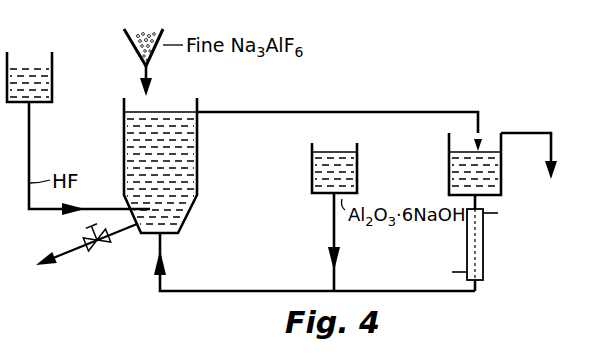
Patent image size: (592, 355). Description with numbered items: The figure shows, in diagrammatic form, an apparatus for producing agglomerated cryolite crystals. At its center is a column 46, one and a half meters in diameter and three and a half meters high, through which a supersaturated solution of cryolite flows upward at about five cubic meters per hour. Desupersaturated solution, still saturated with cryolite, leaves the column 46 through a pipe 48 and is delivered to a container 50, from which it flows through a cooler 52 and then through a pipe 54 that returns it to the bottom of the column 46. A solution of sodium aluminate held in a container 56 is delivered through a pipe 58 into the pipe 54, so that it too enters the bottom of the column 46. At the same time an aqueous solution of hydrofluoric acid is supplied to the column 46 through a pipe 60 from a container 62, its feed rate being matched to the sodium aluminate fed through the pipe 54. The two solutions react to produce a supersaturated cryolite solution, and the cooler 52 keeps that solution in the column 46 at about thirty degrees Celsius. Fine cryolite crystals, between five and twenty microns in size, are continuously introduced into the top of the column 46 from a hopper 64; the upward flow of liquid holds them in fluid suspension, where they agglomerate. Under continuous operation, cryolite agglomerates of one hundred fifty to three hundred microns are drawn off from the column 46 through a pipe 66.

The column 46 is at (197, 153).
The pipe 48 is at (392, 110).
The container 50 is at (449, 165).
The cooler 52 is at (485, 250).
The pipe 54 is at (408, 278).
The container 56 is at (312, 167).
The pipe 58 is at (332, 222).
The pipe 60 is at (30, 150).
The container 62 is at (52, 78).
The hopper 64 is at (134, 46).
The pipe 66 is at (73, 256).